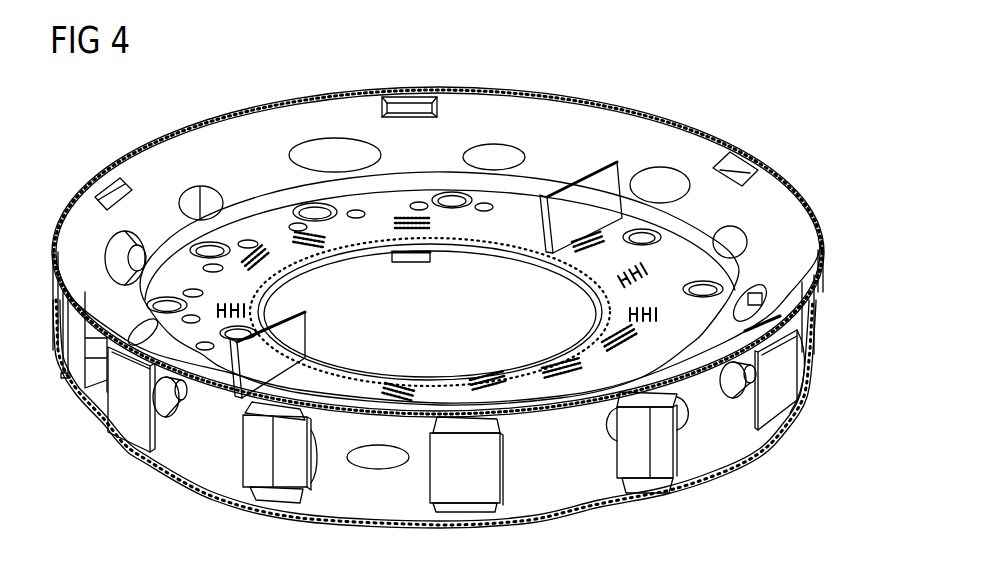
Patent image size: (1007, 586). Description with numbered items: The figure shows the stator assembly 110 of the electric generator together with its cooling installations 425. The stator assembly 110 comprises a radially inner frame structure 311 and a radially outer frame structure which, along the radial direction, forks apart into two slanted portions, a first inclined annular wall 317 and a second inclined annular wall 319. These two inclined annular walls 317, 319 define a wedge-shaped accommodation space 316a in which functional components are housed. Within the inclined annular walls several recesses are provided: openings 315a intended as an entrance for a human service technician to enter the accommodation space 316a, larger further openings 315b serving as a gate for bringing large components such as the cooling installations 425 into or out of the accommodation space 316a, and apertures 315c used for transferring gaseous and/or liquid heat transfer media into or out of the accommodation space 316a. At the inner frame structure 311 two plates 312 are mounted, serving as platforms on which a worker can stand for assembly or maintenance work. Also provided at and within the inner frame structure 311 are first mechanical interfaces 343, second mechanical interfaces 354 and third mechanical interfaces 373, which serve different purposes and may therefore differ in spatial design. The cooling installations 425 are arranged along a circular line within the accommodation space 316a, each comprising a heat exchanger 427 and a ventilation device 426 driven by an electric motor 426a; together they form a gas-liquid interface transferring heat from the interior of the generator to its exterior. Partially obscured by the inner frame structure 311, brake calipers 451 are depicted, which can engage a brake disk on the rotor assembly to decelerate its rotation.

The stator assembly 110 is at (736, 77).
The inner frame structure 311 is at (605, 297).
The plates 312 is at (604, 175).
The openings 315a is at (494, 152).
The further openings 315b is at (333, 150).
The apertures 315c is at (402, 102).
The accommodation space 316a is at (368, 482).
The first inclined annular wall 317 is at (558, 112).
The second inclined annular wall 319 is at (547, 502).
The first mechanical interfaces 343 is at (313, 203).
The second mechanical interfaces 354 is at (472, 397).
The third mechanical interfaces 373 is at (420, 200).
The cooling installations 425 is at (260, 508).
The ventilation device 426 is at (168, 402).
The electric motor 426a is at (714, 374).
The heat exchanger 427 is at (133, 433).
The brake calipers 451 is at (410, 264).